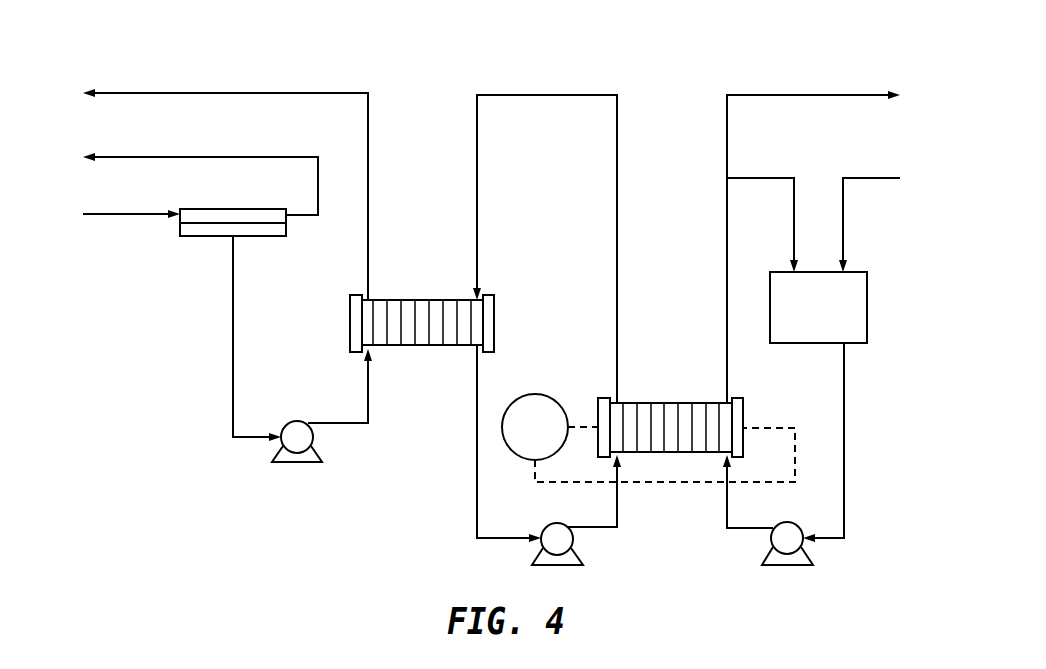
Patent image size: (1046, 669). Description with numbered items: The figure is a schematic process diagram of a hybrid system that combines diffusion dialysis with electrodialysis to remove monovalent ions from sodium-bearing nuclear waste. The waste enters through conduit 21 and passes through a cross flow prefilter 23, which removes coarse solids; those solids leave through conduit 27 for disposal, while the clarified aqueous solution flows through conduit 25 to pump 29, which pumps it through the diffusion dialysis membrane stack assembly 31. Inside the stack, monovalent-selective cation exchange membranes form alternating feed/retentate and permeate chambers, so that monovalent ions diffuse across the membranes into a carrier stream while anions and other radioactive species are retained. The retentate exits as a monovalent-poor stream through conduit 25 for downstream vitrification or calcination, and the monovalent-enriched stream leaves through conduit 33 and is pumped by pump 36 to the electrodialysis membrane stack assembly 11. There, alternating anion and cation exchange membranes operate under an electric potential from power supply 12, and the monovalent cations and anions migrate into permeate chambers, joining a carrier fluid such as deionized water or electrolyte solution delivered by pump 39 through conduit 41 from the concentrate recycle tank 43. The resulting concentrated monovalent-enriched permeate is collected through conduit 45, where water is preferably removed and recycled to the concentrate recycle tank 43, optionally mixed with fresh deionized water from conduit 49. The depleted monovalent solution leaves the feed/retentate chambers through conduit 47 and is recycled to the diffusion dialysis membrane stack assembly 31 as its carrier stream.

The electrodialysis membrane stack assembly 11 is at (697, 395).
The power supply 12 is at (535, 394).
The conduit 21 is at (140, 214).
The cross flow prefilter 23 is at (223, 209).
The conduit 25 is at (284, 93).
The conduit 27 is at (215, 157).
The pump 29 is at (297, 421).
The diffusion dialysis membrane stack assembly 31 is at (350, 318).
The conduit 33 is at (477, 380).
The pump 36 is at (557, 523).
The pump 39 is at (787, 522).
The conduit 41 is at (844, 430).
The concentrate recycle tank 43 is at (867, 308).
The conduit 45 is at (727, 250).
The conduit 47 is at (617, 195).
The conduit 49 is at (843, 208).